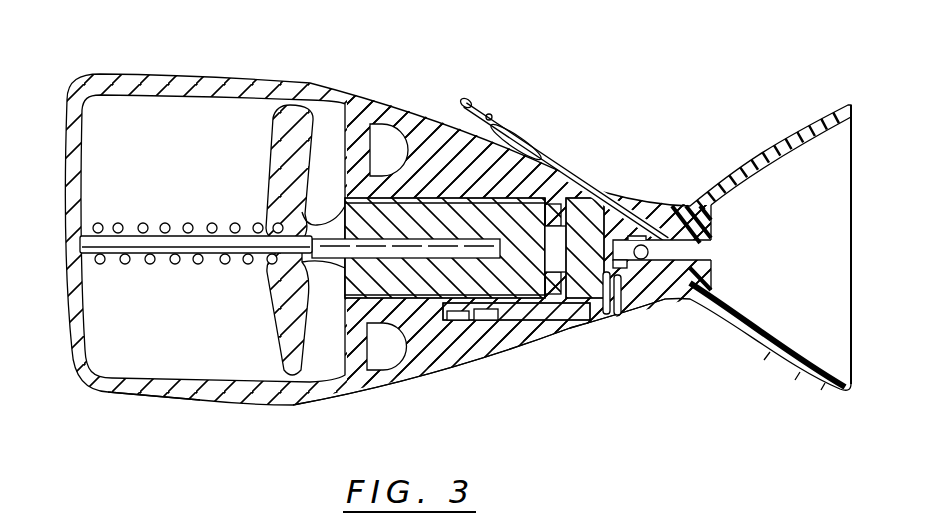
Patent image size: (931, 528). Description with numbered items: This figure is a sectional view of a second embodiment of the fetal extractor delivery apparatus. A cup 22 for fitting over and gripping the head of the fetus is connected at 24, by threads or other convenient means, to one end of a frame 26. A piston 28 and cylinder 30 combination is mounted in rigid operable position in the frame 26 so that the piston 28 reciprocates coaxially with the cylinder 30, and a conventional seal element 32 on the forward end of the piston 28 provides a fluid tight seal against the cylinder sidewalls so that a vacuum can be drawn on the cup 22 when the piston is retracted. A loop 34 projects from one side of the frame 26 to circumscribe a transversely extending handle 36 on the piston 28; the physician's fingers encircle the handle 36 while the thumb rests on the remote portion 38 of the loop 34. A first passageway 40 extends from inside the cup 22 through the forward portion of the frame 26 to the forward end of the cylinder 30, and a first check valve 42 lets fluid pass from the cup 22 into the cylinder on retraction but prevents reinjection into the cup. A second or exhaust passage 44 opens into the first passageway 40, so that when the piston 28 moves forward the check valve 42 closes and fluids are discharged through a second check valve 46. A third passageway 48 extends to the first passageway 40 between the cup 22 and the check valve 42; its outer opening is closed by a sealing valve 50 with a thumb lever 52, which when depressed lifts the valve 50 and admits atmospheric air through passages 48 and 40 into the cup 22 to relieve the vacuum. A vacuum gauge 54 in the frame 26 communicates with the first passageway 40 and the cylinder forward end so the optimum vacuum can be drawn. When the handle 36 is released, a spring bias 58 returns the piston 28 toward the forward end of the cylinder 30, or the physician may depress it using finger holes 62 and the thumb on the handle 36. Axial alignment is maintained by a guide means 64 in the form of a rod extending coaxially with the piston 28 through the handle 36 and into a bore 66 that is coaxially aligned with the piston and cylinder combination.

The cup 22 is at (767, 152).
The connection 24 is at (686, 208).
The frame 26 is at (520, 340).
The piston 28 is at (430, 327).
The cylinder 30 is at (423, 200).
The seal element 32 is at (590, 202).
The loop 34 is at (107, 392).
The handle 36 is at (272, 176).
The remote portion of loop 38 is at (62, 268).
The first passageway 40 is at (706, 253).
The first check valve 42 is at (646, 259).
The second or exhaust passage 44 is at (608, 315).
The second check valve 46 is at (610, 318).
The third passageway 48 is at (557, 197).
The sealing valve 50 is at (508, 120).
The thumb lever 52 is at (461, 97).
The vacuum gauge 54 is at (485, 322).
The spring bias 58 is at (164, 231).
The finger holes 62 is at (378, 137).
The guide means 64 is at (167, 266).
The bore 66 is at (323, 269).